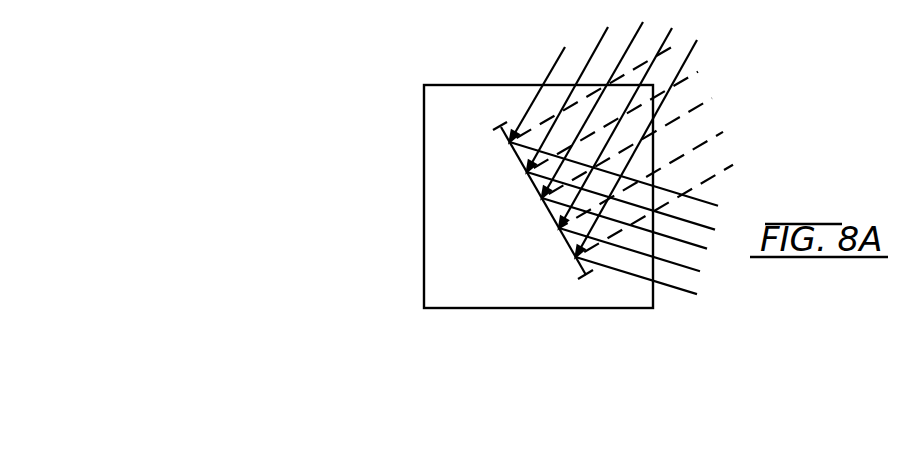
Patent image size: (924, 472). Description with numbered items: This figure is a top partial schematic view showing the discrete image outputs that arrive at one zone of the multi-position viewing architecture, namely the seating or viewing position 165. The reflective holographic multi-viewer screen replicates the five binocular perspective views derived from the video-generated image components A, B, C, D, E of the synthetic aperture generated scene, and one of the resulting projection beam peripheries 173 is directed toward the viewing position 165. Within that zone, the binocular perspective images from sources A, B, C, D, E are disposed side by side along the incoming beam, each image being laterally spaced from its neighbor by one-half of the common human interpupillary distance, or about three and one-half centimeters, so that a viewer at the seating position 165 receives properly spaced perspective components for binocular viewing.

The seating position 165 is at (421, 138).
The projection beam periphery 173 is at (578, 46).
The image A is at (603, 124).
The image B is at (609, 151).
The image C is at (616, 173).
The image D is at (631, 201).
The image E is at (644, 229).